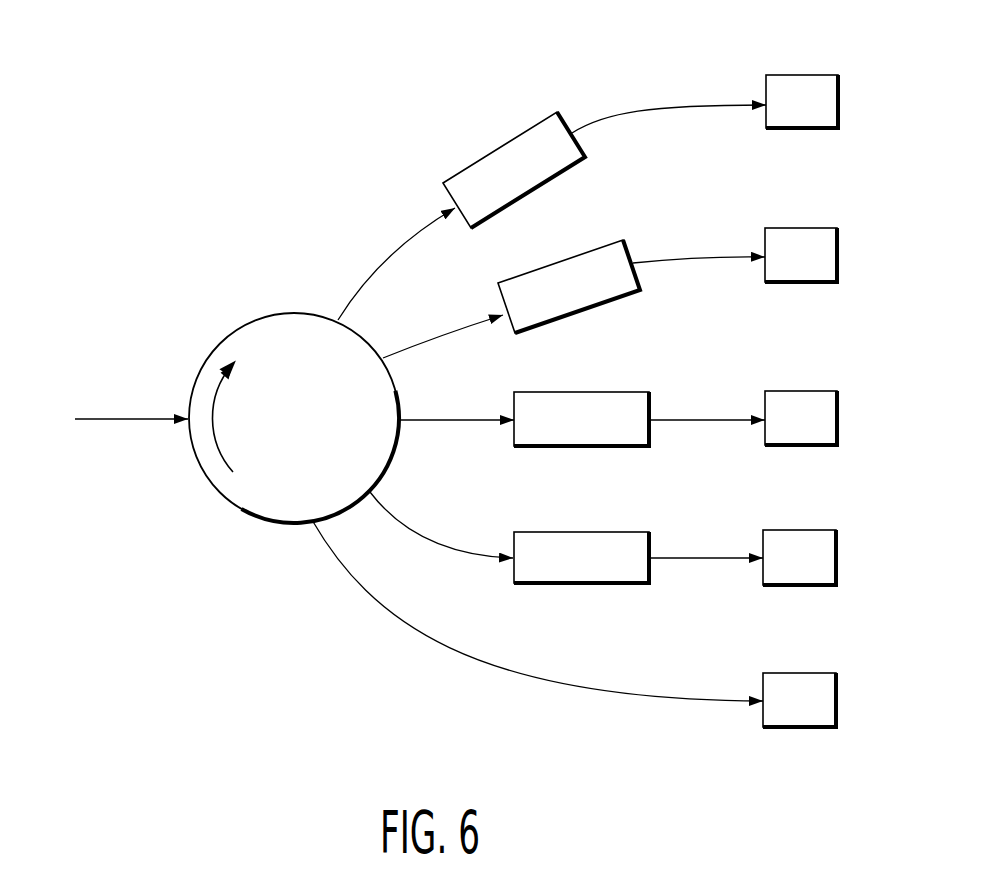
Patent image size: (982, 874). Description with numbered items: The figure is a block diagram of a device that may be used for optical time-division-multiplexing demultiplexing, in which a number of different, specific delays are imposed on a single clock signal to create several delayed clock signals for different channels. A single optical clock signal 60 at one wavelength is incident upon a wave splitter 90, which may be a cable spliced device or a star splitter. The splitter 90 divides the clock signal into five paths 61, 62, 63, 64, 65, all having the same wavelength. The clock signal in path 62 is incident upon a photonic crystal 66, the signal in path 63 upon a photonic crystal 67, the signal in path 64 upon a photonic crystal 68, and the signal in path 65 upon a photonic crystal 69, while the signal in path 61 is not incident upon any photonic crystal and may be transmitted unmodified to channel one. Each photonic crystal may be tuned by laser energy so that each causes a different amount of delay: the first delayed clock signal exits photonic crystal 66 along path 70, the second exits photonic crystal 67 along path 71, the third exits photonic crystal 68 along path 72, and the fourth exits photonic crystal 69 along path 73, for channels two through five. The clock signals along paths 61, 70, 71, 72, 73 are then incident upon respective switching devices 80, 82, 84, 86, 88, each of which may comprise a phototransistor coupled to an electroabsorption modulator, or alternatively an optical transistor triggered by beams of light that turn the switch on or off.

The optical clock signal 60 is at (122, 421).
The wave splitter 90 is at (247, 513).
The path 61 is at (450, 652).
The path 62 is at (428, 542).
The path 63 is at (458, 421).
The path 64 is at (463, 333).
The path 65 is at (412, 246).
The photonic crystal 66 is at (600, 584).
The photonic crystal 67 is at (615, 447).
The photonic crystal 68 is at (578, 312).
The photonic crystal 69 is at (480, 160).
The path 70 is at (693, 559).
The path 71 is at (690, 421).
The path 72 is at (685, 263).
The path 73 is at (648, 111).
The switching device 80 is at (797, 728).
The switching device 82 is at (795, 529).
The switching device 84 is at (788, 390).
The switching device 86 is at (790, 227).
The switching device 88 is at (788, 74).